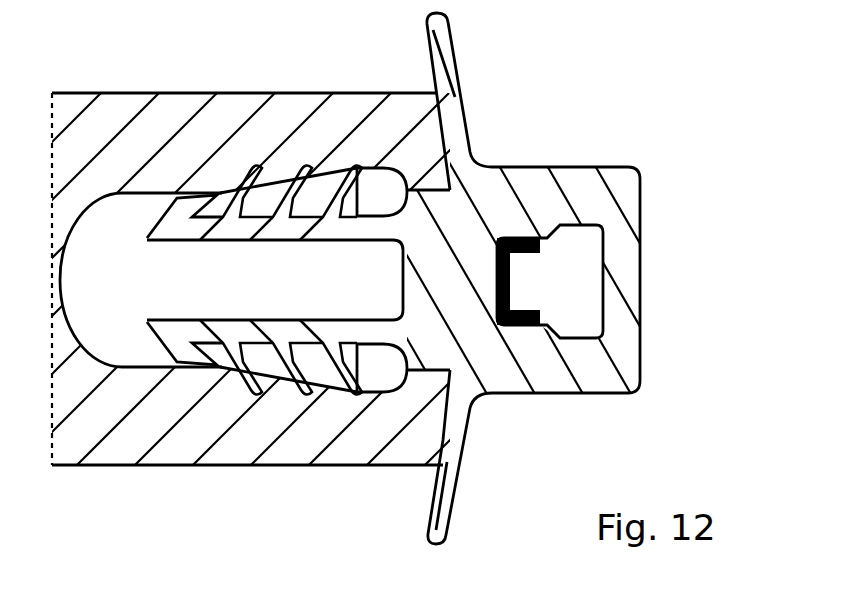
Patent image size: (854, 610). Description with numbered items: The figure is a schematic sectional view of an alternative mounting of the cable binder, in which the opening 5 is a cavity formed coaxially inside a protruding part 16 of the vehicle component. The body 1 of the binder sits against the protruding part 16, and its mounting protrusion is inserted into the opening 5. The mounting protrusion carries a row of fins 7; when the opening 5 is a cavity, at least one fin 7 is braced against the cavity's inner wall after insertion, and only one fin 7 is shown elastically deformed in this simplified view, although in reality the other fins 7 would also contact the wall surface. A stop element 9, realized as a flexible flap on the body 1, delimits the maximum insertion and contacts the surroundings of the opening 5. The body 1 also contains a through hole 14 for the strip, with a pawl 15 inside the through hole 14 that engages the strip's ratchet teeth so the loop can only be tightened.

The body 1 is at (553, 387).
The opening 5 is at (119, 235).
The fin 7 is at (155, 347).
The stop element 9 is at (457, 95).
The through hole 14 is at (577, 246).
The pawl 15 is at (532, 282).
The protruding part 16 is at (335, 450).